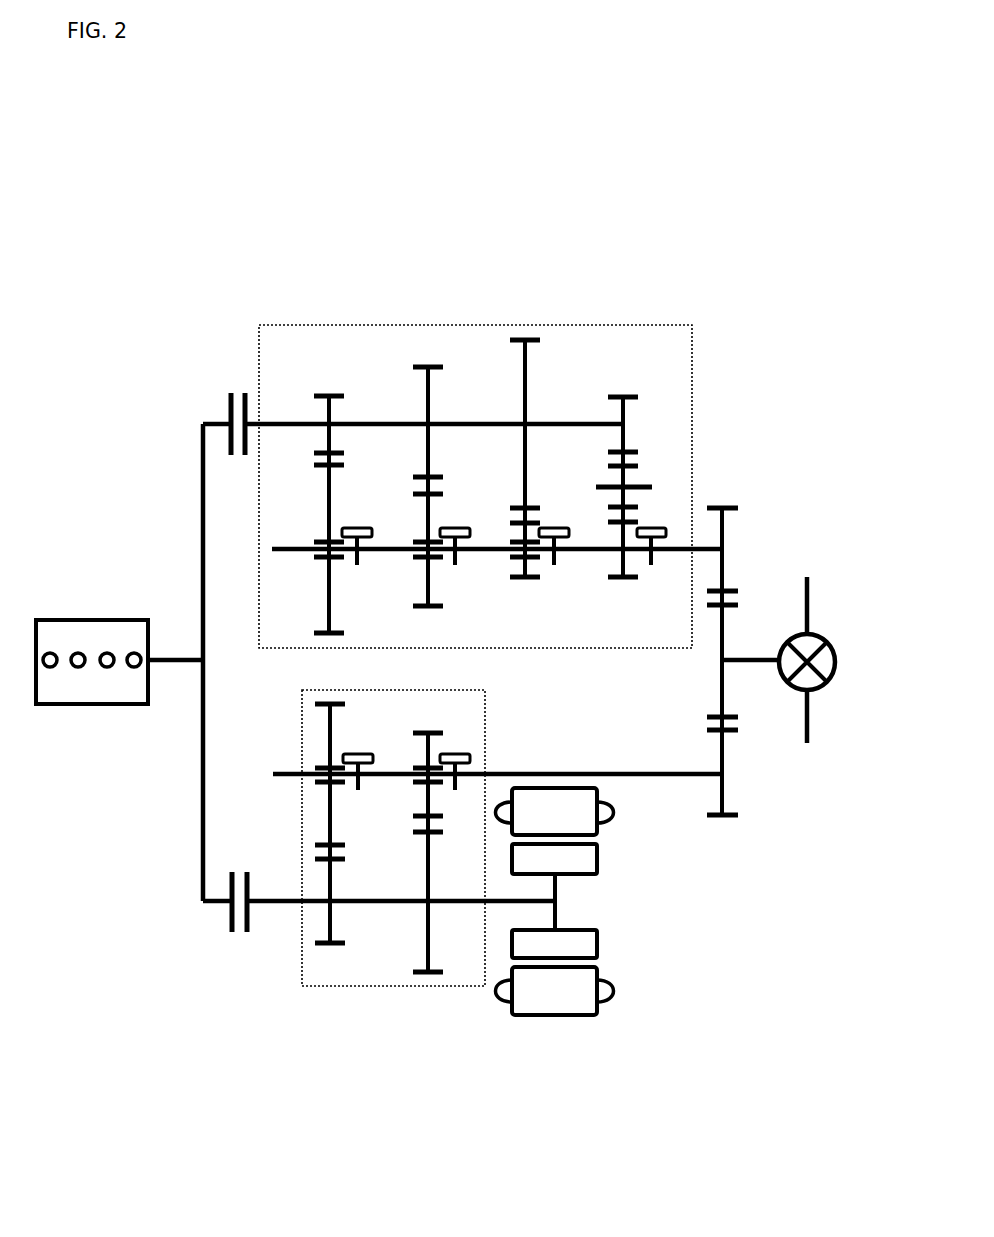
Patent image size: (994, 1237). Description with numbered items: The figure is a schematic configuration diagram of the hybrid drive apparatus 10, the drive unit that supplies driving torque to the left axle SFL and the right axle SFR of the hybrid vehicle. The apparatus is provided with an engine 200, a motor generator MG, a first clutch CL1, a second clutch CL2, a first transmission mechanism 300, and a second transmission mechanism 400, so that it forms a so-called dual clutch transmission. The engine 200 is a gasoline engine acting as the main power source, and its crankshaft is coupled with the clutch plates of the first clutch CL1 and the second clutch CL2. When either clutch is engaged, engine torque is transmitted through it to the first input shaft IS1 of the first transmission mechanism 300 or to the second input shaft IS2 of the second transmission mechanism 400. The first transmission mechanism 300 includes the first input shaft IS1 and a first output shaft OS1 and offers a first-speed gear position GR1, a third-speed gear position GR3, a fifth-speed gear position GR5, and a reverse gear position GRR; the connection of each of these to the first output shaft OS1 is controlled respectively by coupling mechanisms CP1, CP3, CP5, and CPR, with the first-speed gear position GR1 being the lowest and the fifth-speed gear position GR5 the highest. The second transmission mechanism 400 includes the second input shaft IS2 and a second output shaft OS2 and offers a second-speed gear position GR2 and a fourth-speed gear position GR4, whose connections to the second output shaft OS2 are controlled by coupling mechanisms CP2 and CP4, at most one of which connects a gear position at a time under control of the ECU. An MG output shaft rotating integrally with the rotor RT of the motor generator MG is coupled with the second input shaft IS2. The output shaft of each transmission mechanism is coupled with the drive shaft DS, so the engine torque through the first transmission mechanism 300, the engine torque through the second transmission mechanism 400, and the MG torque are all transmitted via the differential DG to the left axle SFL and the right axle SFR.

The hybrid drive apparatus 10 is at (74, 250).
The engine 200 is at (72, 620).
The first transmission mechanism 300 is at (692, 325).
The second transmission mechanism 400 is at (472, 987).
The first clutch CL1 is at (215, 396).
The second clutch CL2 is at (220, 934).
The first input shaft IS1 is at (555, 422).
The second input shaft IS2 is at (278, 903).
The first output shaft OS1 is at (570, 553).
The second output shaft OS2 is at (535, 772).
The first-speed gear position GR1 is at (323, 391).
The second-speed gear position GR2 is at (327, 972).
The third-speed gear position GR3 is at (406, 377).
The fourth-speed gear position GR4 is at (404, 972).
The fifth-speed gear position GR5 is at (506, 379).
The reverse gear position GRR is at (652, 431).
The coupling mechanism CP1 is at (357, 535).
The coupling mechanism CP2 is at (358, 761).
The coupling mechanism CP3 is at (455, 535).
The coupling mechanism CP4 is at (456, 761).
The coupling mechanism CP5 is at (555, 535).
The coupling mechanism CPR is at (661, 535).
The motor generator MG is at (594, 901).
The rotor RT is at (554, 901).
The drive shaft DS is at (757, 663).
The differential DG is at (835, 653).
The right axle SFR is at (825, 597).
The left axle SFL is at (825, 726).